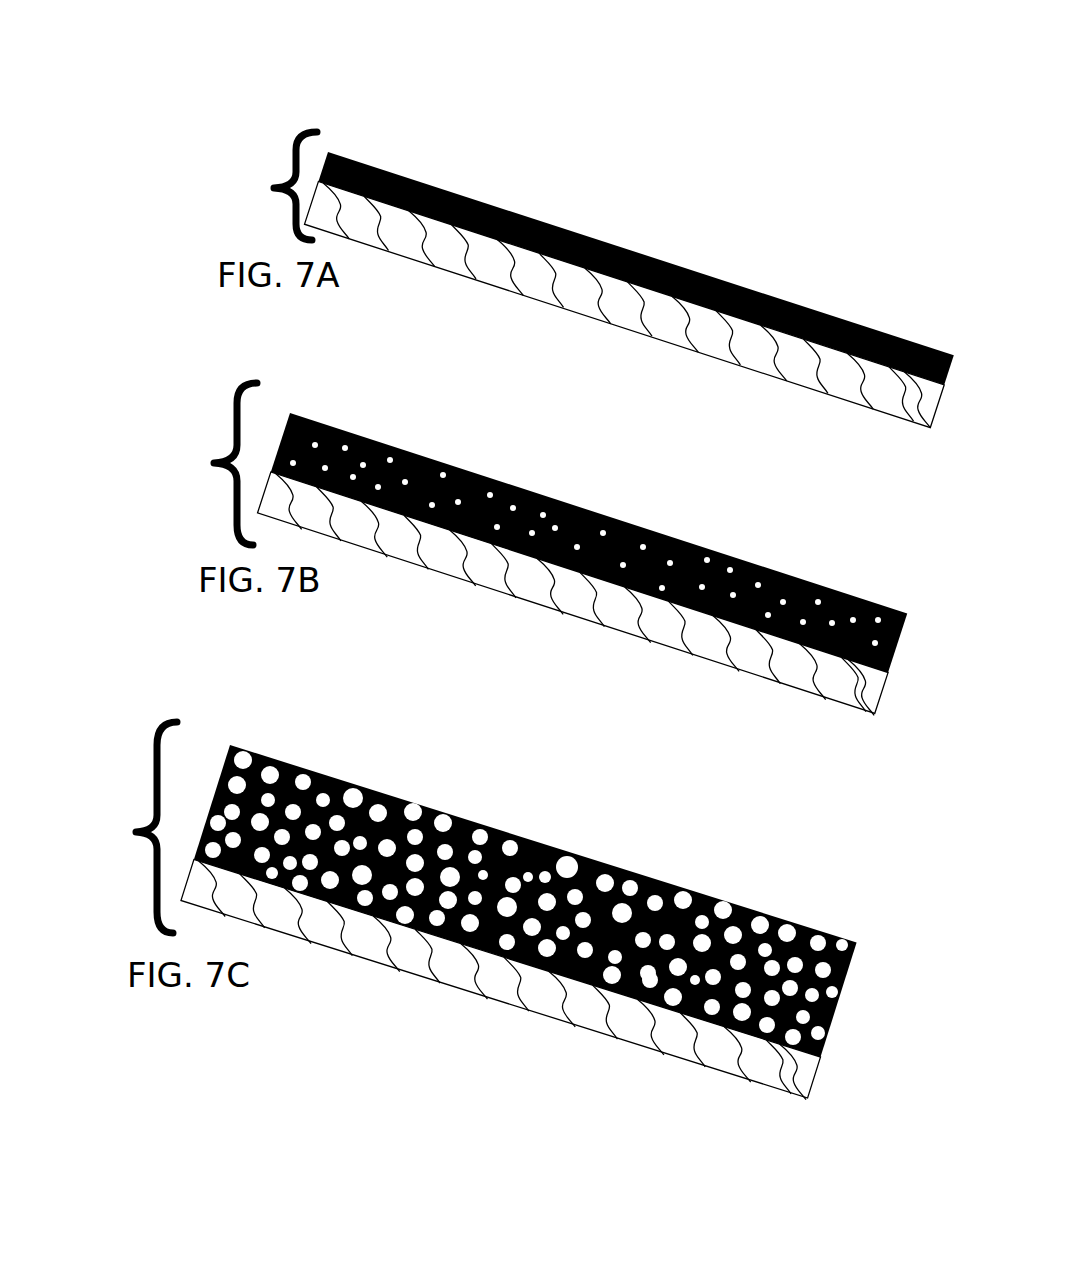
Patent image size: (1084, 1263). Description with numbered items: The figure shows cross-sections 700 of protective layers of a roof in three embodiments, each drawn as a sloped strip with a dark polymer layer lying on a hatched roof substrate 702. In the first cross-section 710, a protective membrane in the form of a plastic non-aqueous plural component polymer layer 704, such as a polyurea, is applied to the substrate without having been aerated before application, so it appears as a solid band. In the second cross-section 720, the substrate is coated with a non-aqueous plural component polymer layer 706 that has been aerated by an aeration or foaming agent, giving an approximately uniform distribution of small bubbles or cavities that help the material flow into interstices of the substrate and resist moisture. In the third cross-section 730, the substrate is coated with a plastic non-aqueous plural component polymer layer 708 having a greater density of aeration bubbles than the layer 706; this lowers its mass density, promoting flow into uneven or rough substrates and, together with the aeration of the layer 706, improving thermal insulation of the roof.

In FIG. 7A, the cross-sections of protective layers of a roof 700 is at (408, 140).
In FIG. 7A, the substrate 702 is at (625, 304).
In FIG. 7B, the substrate 702 is at (942, 1168).
In FIG. 7C, the substrate 702 is at (806, 1098).
In FIG. 7A, the non-aqueous plural component polymer layer 704 is at (635, 268).
In FIG. 7B, the aerated non-aqueous plural component polymer layer 706 is at (623, 543).
In FIG. 7C, the aerated plastic non-aqueous plural component polymer layer 708 is at (497, 880).
In FIG. 7A, the cross-section 710 is at (272, 188).
In FIG. 7B, the cross-section 720 is at (212, 463).
In FIG. 7C, the cross-section 730 is at (135, 832).